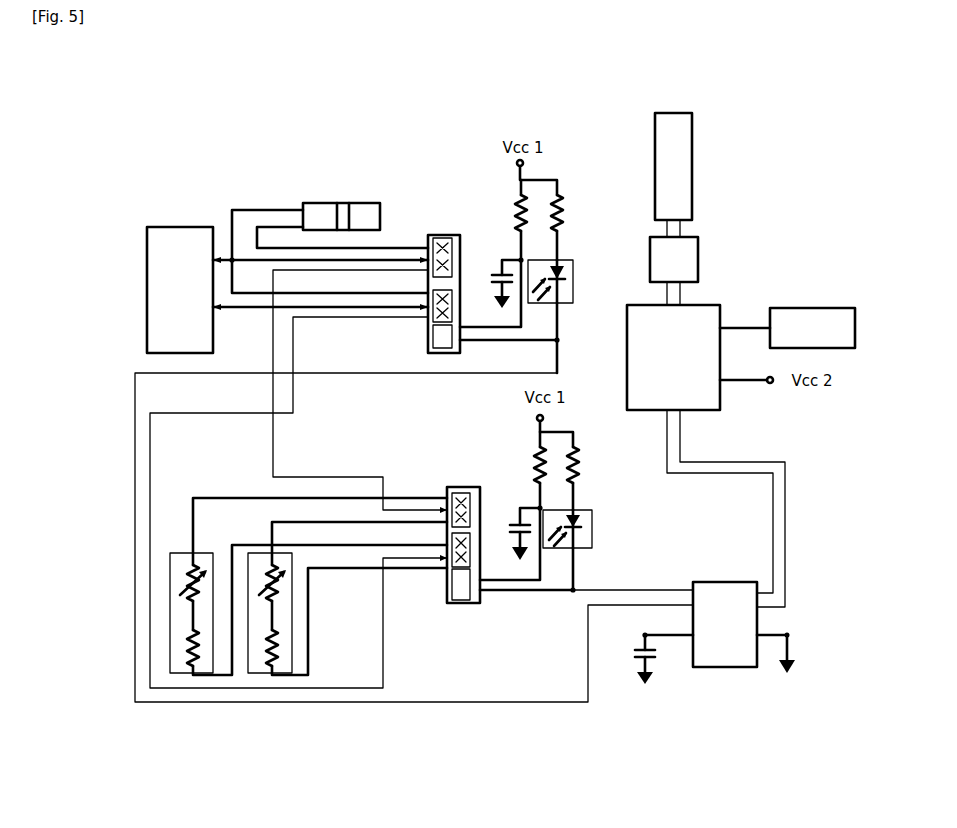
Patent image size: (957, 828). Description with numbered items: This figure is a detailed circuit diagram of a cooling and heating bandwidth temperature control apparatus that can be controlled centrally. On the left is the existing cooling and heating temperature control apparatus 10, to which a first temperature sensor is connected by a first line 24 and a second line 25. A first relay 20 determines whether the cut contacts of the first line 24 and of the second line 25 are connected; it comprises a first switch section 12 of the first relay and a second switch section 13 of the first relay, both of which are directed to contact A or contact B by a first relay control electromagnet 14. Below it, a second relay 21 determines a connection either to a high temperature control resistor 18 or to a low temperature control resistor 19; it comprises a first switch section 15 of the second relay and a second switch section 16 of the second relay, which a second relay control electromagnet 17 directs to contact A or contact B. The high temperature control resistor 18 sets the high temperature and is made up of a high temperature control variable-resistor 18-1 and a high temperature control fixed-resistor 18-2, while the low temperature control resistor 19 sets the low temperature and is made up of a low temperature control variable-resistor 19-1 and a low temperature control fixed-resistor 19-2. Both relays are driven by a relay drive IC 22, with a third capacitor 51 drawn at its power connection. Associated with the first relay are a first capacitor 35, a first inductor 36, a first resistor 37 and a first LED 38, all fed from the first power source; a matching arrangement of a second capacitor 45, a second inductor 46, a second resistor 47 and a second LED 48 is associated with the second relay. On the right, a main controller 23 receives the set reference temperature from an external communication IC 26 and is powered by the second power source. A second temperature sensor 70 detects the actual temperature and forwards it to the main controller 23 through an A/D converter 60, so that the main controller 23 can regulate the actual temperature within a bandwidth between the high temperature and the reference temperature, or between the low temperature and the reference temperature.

The cooling and heating temperature control apparatus 10 is at (287, 290).
The first switch section of the first relay 12 is at (428, 236).
The second switch section of the first relay 13 is at (430, 327).
The first relay control electromagnet 14 is at (446, 353).
The first switch section of the second relay 15 is at (475, 560).
The second switch section of the second relay 16 is at (455, 575).
The second relay control electromagnet 17 is at (463, 600).
The high temperature control resistor 18 is at (246, 588).
The high temperature control variable-resistor 18-1 is at (203, 573).
The high temperature control fixed-resistor 18-2 is at (195, 652).
The low temperature control resistor 19 is at (260, 578).
The low temperature control variable-resistor 19-1 is at (284, 590).
The low temperature control fixed-resistor 19-2 is at (270, 652).
The first relay 20 is at (442, 235).
The second relay 21 is at (463, 605).
The relay drive IC 22 is at (725, 624).
The main controller 23 is at (673, 357).
The first line 24 is at (290, 226).
The second line 25 is at (248, 208).
The external communication IC 26 is at (787, 328).
The first capacitor 35 is at (497, 272).
The first inductor 36 is at (528, 193).
The first resistor 37 is at (561, 205).
The first LED 38 is at (574, 265).
The second capacitor 45 is at (527, 533).
The second inductor 46 is at (545, 473).
The second resistor 47 is at (578, 447).
The second LED 48 is at (592, 536).
The third capacitor 51 is at (655, 658).
The A/D converter 60 is at (674, 259).
The second temperature sensor 70 is at (673, 166).